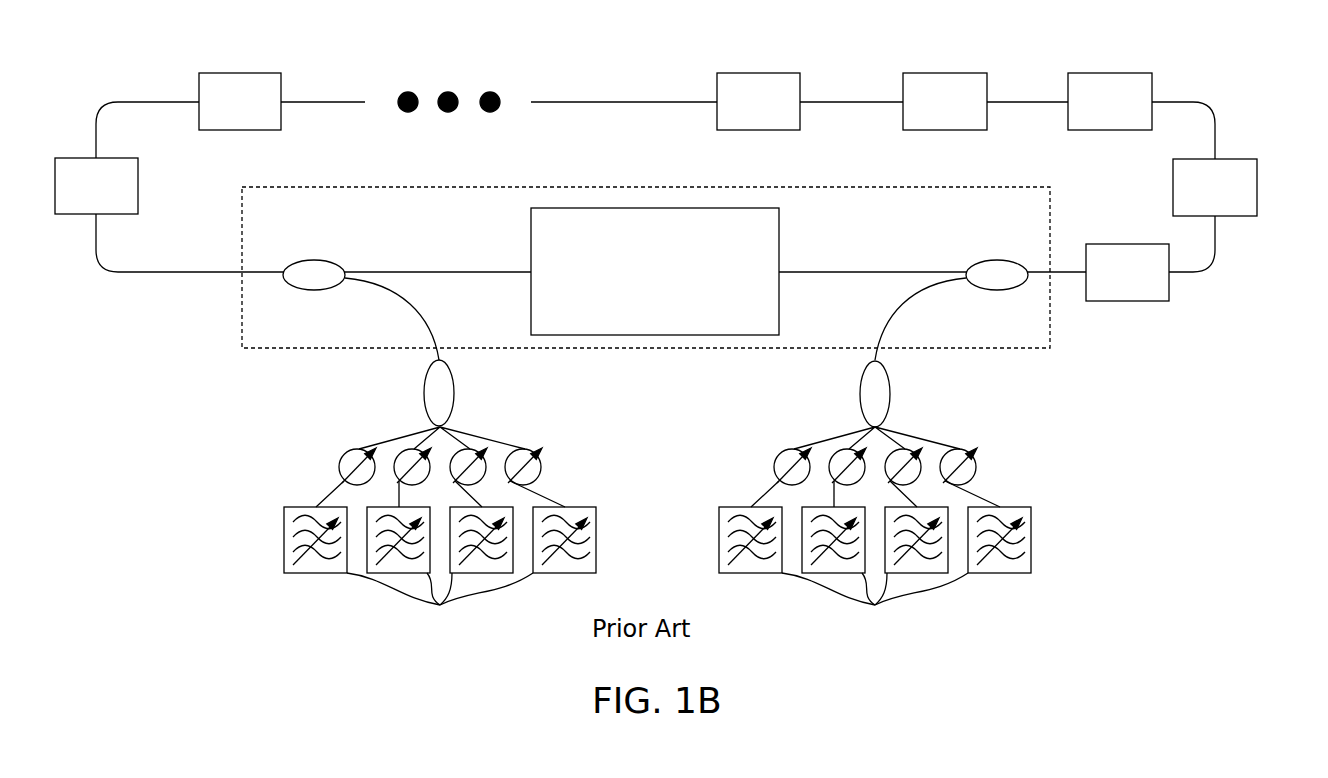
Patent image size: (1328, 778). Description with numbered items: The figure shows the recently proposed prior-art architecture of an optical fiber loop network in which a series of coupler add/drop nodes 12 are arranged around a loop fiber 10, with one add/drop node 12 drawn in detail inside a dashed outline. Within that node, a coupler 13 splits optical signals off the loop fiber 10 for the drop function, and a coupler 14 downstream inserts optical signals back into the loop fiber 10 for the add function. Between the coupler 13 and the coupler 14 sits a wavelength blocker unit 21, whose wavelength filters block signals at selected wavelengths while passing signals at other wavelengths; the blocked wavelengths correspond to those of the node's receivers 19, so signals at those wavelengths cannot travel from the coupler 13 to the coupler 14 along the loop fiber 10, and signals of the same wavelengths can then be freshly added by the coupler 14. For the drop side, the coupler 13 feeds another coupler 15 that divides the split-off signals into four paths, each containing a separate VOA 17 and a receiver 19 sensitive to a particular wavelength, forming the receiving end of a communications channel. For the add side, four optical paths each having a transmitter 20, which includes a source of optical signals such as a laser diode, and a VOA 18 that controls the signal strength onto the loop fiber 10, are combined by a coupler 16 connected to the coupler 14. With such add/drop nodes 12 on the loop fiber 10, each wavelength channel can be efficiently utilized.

The loop fiber 10 is at (210, 272).
The add/drop node 12 is at (260, 73).
The coupler 13 is at (316, 261).
The coupler 14 is at (998, 262).
The coupler 15 is at (455, 393).
The coupler 16 is at (891, 393).
The VOA (variable optical attenuator) 17 is at (412, 449).
The VOA (variable optical attenuator) 18 is at (847, 449).
The receiver 19 is at (440, 517).
The transmitter 20 is at (875, 520).
The wavelength blocker unit 21 is at (697, 208).